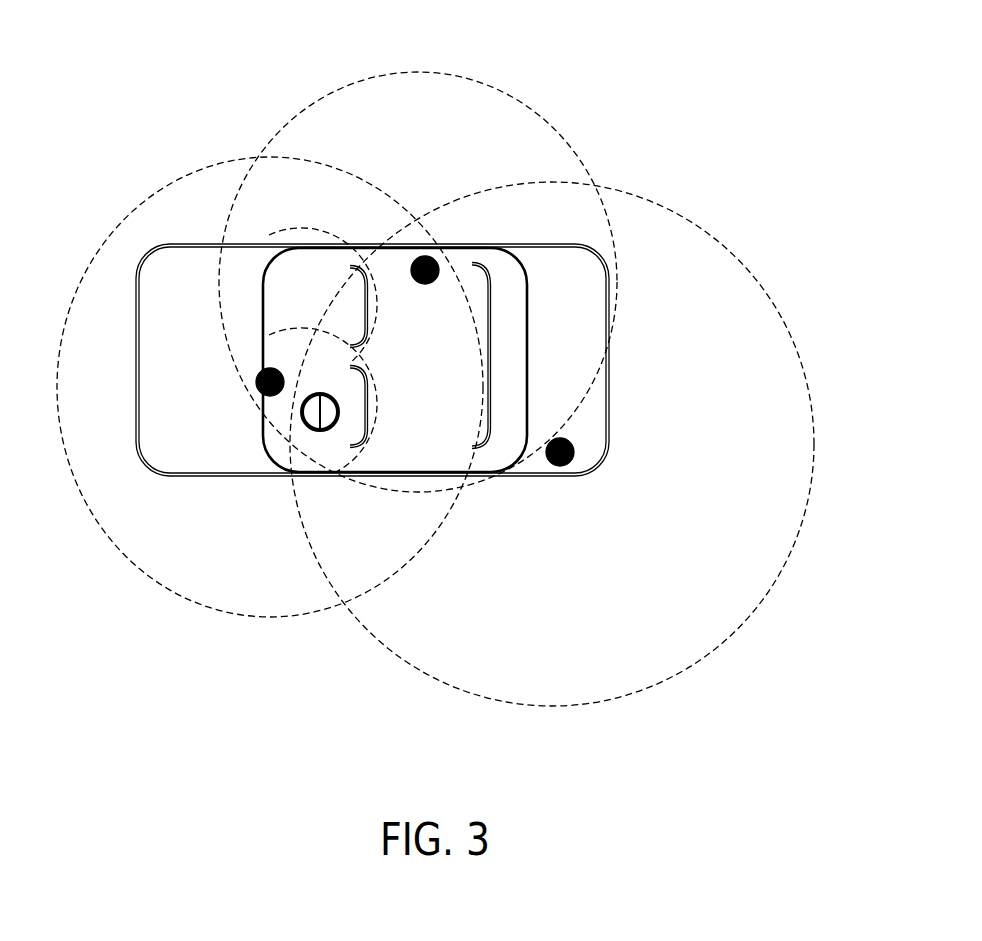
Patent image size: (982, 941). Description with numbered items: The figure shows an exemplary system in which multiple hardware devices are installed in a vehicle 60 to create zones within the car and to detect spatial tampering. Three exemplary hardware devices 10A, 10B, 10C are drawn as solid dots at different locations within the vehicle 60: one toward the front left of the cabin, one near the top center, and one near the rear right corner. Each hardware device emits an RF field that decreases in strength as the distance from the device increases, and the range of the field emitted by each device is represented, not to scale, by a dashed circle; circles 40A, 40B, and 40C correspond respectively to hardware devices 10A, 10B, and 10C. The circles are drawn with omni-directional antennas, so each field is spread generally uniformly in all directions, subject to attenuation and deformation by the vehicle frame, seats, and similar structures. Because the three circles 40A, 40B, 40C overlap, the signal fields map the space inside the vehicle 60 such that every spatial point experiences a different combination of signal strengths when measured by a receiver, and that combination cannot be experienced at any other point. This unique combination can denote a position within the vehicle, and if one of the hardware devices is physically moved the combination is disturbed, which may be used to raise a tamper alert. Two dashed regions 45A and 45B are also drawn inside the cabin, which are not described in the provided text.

The hardware device 10A is at (262, 370).
The hardware device 10B is at (427, 286).
The hardware device 10C is at (585, 437).
The circle representing RF field range 40A is at (158, 583).
The circle representing RF field range 40B is at (563, 140).
The circle representing RF field range 40C is at (390, 650).
The first zone 45A is at (294, 333).
The second zone 45B is at (302, 231).
The vehicle 60 is at (605, 310).